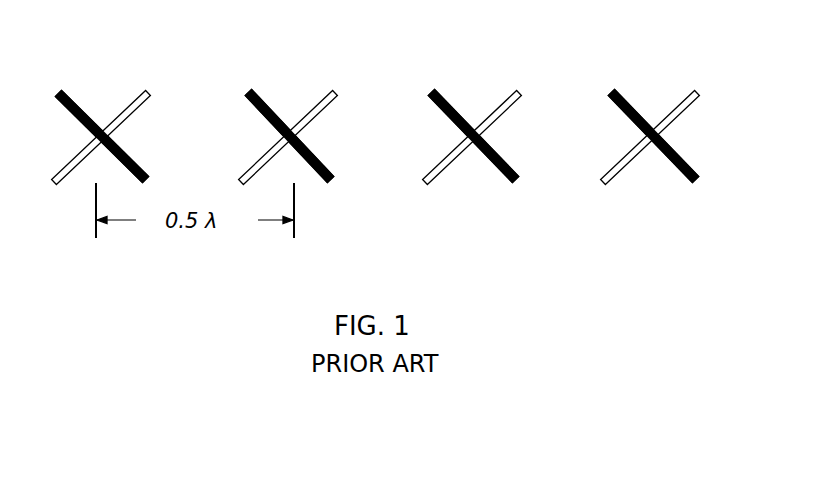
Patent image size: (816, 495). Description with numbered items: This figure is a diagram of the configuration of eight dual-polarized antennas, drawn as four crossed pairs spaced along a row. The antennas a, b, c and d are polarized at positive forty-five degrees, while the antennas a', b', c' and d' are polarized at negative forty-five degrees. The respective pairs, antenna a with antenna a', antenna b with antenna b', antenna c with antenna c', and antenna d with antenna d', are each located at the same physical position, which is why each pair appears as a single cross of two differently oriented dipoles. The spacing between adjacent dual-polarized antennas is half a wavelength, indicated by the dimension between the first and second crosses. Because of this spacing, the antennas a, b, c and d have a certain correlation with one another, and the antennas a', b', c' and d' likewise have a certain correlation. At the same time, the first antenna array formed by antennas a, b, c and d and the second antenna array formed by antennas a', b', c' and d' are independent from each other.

The antenna a' is at (94, 119).
The antenna a is at (103, 121).
The antenna b' is at (279, 118).
The antenna b is at (290, 120).
The antenna c' is at (461, 117).
The antenna c is at (473, 120).
The antenna d' is at (642, 117).
The antenna d is at (652, 120).